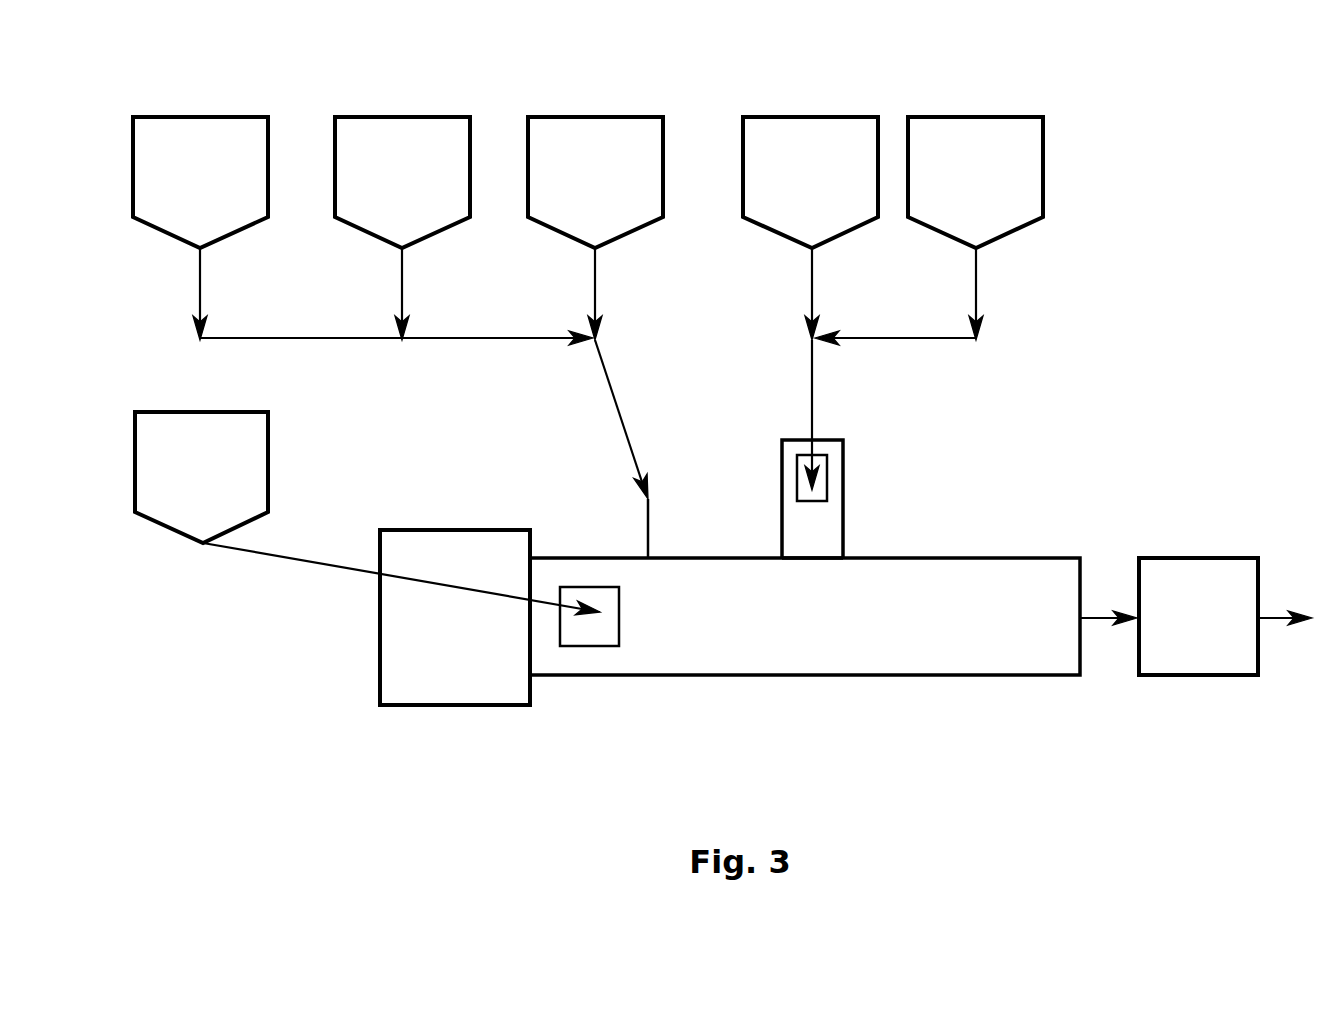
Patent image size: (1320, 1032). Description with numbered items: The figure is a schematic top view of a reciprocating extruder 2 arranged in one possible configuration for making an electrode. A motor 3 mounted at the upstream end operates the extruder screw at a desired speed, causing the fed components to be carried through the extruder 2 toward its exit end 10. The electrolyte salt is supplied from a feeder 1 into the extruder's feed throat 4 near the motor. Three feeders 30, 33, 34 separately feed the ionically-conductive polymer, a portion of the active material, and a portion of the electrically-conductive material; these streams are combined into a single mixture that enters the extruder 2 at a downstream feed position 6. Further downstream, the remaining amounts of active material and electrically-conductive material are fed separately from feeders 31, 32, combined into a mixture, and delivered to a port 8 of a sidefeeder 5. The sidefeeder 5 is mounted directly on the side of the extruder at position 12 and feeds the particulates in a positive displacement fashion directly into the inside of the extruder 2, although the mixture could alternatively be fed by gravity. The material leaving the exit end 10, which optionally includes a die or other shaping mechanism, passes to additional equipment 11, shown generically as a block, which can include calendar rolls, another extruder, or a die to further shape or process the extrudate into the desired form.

The feeder 1 is at (135, 452).
The reciprocating extruder 2 is at (771, 655).
The motor 3 is at (380, 686).
The feed throat 4 is at (590, 647).
The sidefeeder 5 is at (782, 500).
The second feed location 6 is at (647, 523).
The port 8 is at (855, 421).
The exit end 10 is at (1101, 650).
The additional equipment 11 is at (1218, 677).
The position 12 is at (836, 560).
The feeder 30 is at (582, 117).
The feeder 31 is at (802, 117).
The feeder 32 is at (977, 117).
The feeder 33 is at (207, 117).
The feeder 34 is at (417, 117).